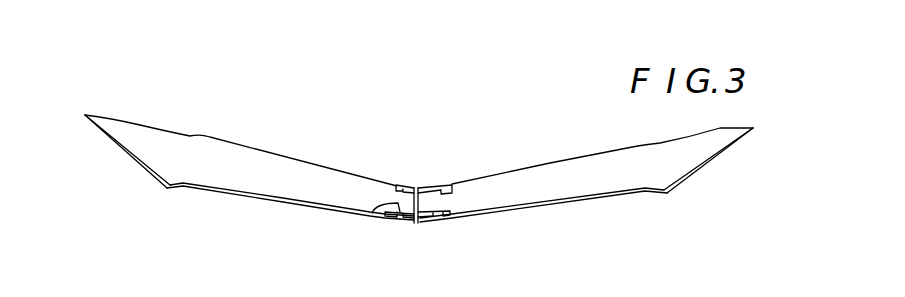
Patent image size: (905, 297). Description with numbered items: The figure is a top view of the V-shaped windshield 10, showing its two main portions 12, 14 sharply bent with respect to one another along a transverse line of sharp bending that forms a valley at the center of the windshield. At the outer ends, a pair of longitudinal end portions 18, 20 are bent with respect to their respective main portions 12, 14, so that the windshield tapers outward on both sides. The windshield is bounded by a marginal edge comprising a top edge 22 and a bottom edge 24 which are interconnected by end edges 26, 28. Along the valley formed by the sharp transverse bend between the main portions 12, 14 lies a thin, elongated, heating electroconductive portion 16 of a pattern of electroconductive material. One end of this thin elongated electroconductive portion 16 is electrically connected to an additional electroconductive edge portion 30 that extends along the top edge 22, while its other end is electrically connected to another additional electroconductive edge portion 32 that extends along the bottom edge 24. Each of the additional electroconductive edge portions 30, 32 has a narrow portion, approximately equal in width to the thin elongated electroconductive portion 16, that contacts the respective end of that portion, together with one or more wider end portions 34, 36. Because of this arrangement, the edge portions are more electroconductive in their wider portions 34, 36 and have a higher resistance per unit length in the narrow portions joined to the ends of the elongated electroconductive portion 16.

The V-shaped windshield 10 is at (466, 106).
The main portion 12 is at (243, 180).
The main portion 14 is at (587, 192).
The thin elongated electroconductive portion 16 is at (448, 202).
The longitudinal end portion 18 is at (143, 143).
The longitudinal end portion 20 is at (680, 157).
The top edge 22 is at (568, 210).
The bottom edge 24 is at (297, 150).
The end edge 26 is at (140, 165).
The end edge 28 is at (698, 180).
The additional electroconductive edge portion 30 is at (410, 218).
The additional electroconductive edge portion 32 is at (413, 186).
The wider end portion 34 is at (374, 208).
The wider end portion 36 is at (452, 187).